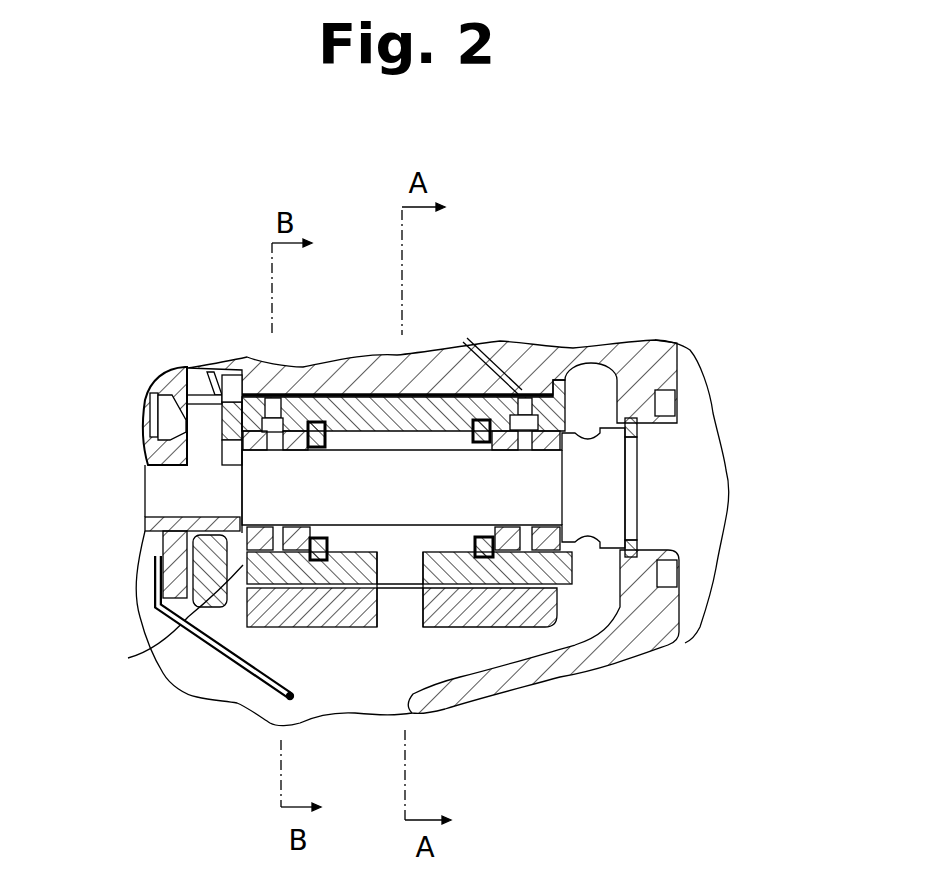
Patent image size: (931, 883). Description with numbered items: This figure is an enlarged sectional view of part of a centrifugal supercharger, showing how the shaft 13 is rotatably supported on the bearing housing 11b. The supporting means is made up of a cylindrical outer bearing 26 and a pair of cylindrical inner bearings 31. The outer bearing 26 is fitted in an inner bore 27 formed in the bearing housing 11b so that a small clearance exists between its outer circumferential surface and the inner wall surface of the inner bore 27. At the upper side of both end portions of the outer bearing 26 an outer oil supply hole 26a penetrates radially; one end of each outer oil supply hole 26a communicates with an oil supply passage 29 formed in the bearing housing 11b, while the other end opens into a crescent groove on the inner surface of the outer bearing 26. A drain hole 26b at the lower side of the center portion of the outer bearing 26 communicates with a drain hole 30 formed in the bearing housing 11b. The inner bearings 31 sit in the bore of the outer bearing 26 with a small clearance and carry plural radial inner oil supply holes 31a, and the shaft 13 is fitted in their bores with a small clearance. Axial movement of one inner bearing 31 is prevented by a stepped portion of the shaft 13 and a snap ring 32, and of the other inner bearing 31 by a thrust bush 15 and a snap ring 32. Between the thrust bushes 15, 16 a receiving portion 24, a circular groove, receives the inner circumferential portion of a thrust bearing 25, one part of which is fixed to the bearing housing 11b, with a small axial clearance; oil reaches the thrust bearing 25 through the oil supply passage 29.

The bearing housing 11b is at (529, 348).
The shaft 13 is at (540, 497).
The thrust bush 15 is at (243, 562).
The thrust bush 16 is at (140, 528).
The receiving portion 24 is at (188, 370).
The thrust bearing 25 is at (160, 615).
The outer bearing 26 is at (438, 405).
The outer oil supply hole 26a is at (262, 398).
The drain hole 26b is at (412, 608).
The inner bore 27 is at (543, 565).
The oil supply passage 29 is at (300, 395).
The drain hole 30 is at (410, 568).
The inner bearing 31 is at (278, 398).
The inner oil supply hole 31a is at (141, 441).
The snap ring 32 is at (318, 562).